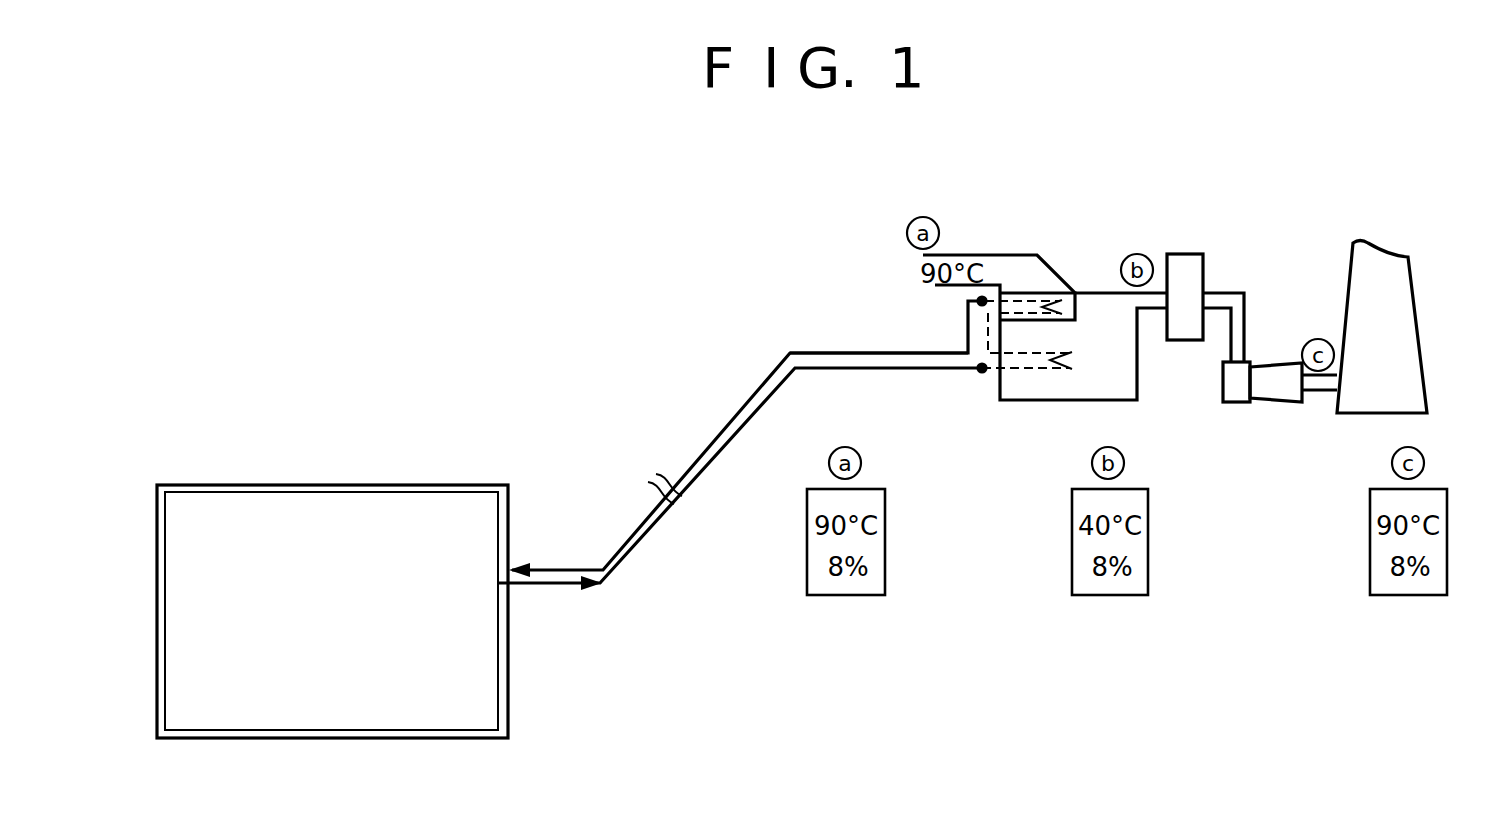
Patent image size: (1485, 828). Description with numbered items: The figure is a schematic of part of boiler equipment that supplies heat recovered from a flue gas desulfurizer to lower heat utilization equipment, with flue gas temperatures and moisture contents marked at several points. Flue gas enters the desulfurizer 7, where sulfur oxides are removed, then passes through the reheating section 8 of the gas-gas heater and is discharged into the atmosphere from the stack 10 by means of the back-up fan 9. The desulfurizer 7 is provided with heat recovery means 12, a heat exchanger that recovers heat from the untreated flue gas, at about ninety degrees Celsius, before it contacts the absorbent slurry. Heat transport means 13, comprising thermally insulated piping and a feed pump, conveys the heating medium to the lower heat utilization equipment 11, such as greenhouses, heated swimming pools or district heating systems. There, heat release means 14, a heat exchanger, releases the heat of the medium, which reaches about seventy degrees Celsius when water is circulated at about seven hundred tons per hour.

The desulfurizer 7 is at (1052, 262).
The reheating section 8 is at (1183, 254).
The back-up fan 9 is at (1283, 362).
The stack 10 is at (1413, 290).
The lower heat utilization equipment 11 is at (428, 485).
The heat recovery means 12 is at (1028, 385).
The heat transport means 13 is at (742, 405).
The heat release means 14 is at (420, 604).